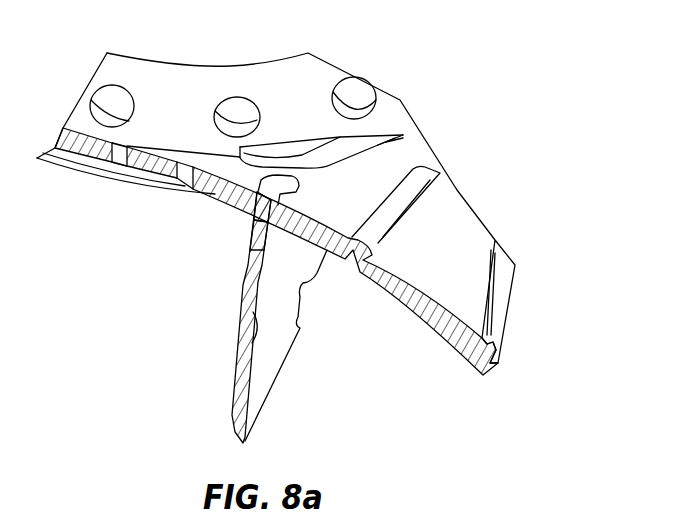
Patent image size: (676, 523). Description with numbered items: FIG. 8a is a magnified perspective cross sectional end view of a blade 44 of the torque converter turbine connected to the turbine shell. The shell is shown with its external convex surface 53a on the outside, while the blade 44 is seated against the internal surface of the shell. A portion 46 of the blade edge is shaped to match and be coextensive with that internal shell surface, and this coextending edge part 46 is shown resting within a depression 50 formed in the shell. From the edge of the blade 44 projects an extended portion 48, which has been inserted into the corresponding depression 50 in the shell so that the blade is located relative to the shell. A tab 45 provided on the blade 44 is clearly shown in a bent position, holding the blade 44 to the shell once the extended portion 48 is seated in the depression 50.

The blade 44 is at (278, 335).
The tab 45 is at (290, 150).
The portion of edge 46 is at (255, 196).
The extended portion 48 is at (258, 203).
The depression 50 is at (253, 193).
The external convex surface 53a is at (455, 233).